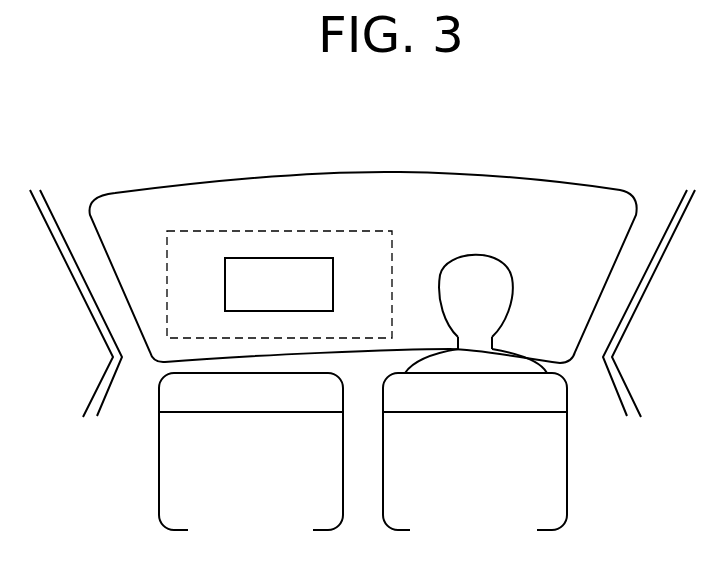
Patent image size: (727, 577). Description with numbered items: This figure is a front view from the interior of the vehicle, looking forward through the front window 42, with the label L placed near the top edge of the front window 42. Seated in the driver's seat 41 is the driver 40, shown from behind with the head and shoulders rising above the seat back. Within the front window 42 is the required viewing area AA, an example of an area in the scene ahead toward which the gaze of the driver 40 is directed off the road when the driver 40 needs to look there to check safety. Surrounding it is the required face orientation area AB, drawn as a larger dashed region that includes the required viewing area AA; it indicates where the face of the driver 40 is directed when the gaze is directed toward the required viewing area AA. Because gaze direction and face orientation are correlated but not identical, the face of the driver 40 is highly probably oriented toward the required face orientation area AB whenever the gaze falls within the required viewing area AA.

The required viewing area AA is at (225, 290).
The required face orientation area AB is at (242, 232).
The front window 42 is at (495, 193).
The light L is at (365, 238).
The driver 40 is at (523, 257).
The driver's seat 41 is at (547, 468).